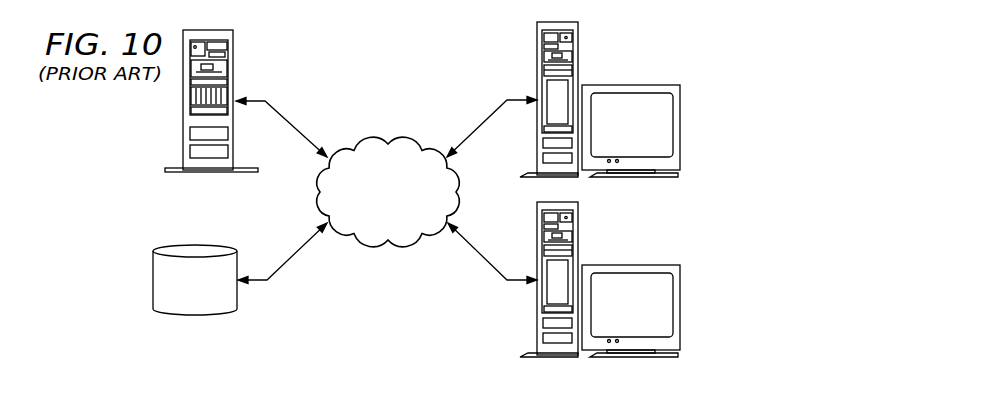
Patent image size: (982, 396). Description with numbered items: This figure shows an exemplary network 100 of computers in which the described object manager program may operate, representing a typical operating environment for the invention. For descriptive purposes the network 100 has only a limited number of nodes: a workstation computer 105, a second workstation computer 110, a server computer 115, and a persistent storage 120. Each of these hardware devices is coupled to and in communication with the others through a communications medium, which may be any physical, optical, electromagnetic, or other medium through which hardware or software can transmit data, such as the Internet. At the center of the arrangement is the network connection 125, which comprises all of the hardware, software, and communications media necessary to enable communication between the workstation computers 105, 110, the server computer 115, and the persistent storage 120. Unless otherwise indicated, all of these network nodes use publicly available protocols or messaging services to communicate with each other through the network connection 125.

The network 100 is at (422, 297).
The workstation computer 105 is at (631, 85).
The workstation computer 110 is at (631, 265).
The server computer 115 is at (183, 123).
The persistent storage 120 is at (153, 279).
The network connection 125 is at (404, 203).